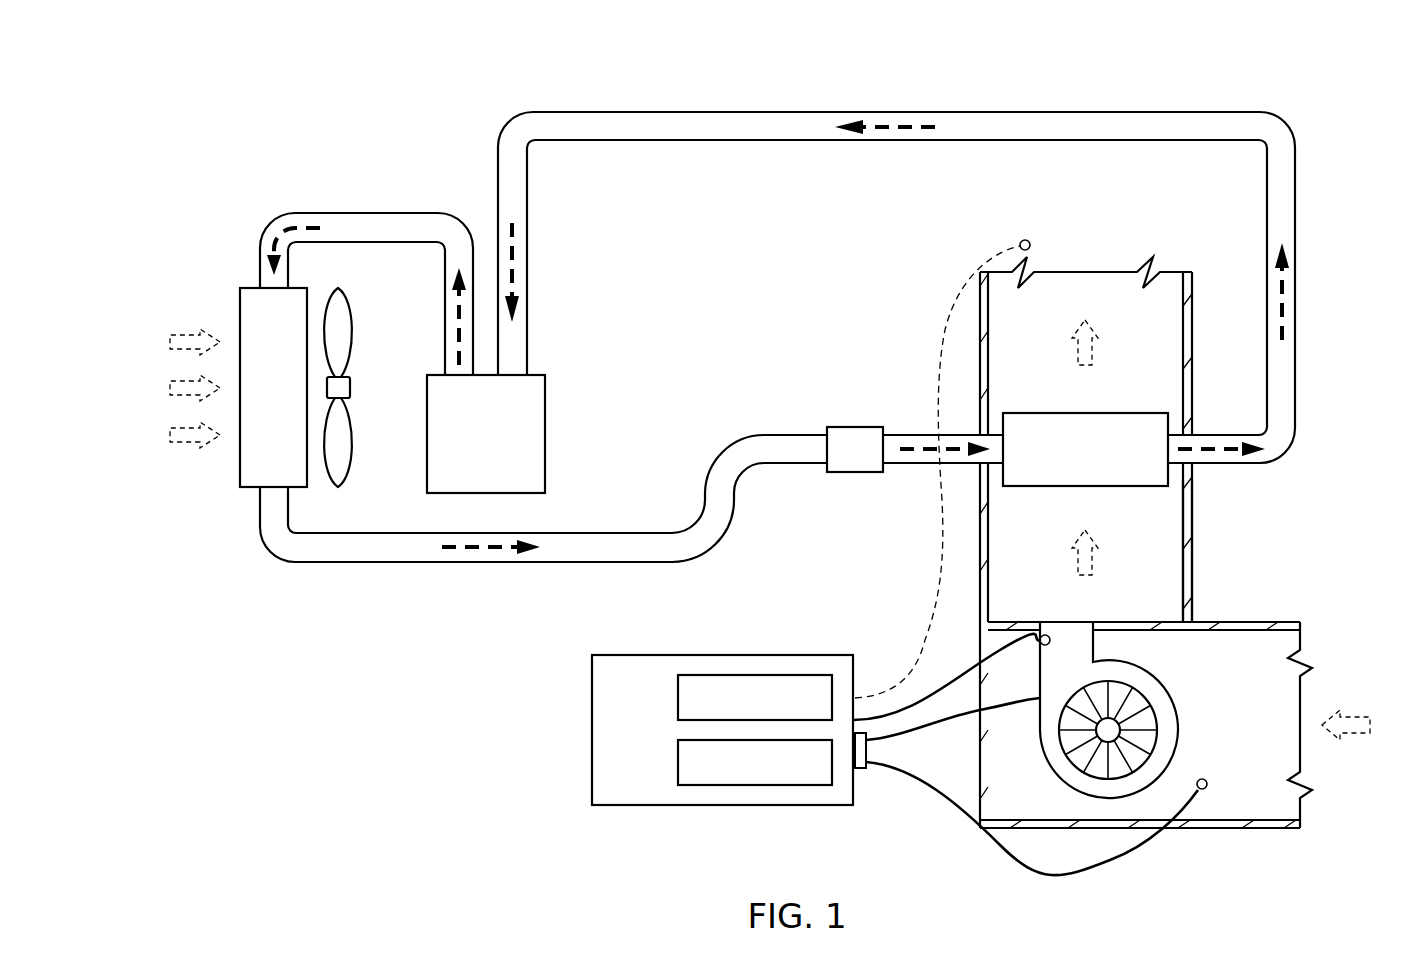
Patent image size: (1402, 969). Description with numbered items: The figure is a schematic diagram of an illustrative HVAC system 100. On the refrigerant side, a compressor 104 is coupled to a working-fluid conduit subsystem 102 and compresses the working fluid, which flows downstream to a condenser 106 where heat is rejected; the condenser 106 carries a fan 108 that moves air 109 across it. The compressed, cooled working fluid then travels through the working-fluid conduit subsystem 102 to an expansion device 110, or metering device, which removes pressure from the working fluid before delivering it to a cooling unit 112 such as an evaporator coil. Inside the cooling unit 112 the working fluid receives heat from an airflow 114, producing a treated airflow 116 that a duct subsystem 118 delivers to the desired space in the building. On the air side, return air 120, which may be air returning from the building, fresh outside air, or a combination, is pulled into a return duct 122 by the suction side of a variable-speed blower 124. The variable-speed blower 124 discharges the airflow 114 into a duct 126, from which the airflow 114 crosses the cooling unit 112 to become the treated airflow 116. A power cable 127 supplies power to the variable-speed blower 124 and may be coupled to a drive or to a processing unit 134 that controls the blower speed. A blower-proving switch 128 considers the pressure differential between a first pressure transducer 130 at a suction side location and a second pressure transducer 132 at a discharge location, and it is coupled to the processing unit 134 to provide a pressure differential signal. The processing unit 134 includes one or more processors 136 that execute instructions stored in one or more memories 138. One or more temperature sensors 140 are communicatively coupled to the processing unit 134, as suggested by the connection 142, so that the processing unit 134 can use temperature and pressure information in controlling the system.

The HVAC system 100 is at (516, 689).
The working-fluid conduit subsystem 102 is at (706, 112).
The compressor 104 is at (545, 430).
The condenser 106 is at (240, 460).
The fan 108 is at (353, 320).
The air 109 is at (188, 333).
The expansion device 110 is at (852, 427).
The cooling unit 112 is at (1048, 413).
The airflow 114 is at (1095, 562).
The treated airflow 116 is at (1098, 350).
The duct subsystem 118 is at (1192, 328).
The return air 120 is at (1355, 735).
The return duct 122 is at (1270, 828).
The variable-speed blower 124 is at (1175, 712).
The duct 126 is at (1192, 505).
The power cable 127 is at (938, 723).
The blower-proving switch 128 is at (868, 770).
The first pressure transducer 130 is at (1207, 779).
The second pressure transducer 132 is at (1050, 636).
The processing unit 134 is at (702, 811).
The processor 136 is at (678, 697).
The memory 138 is at (678, 762).
The temperature sensor 140 is at (1027, 240).
The communicative coupling 142 is at (937, 325).